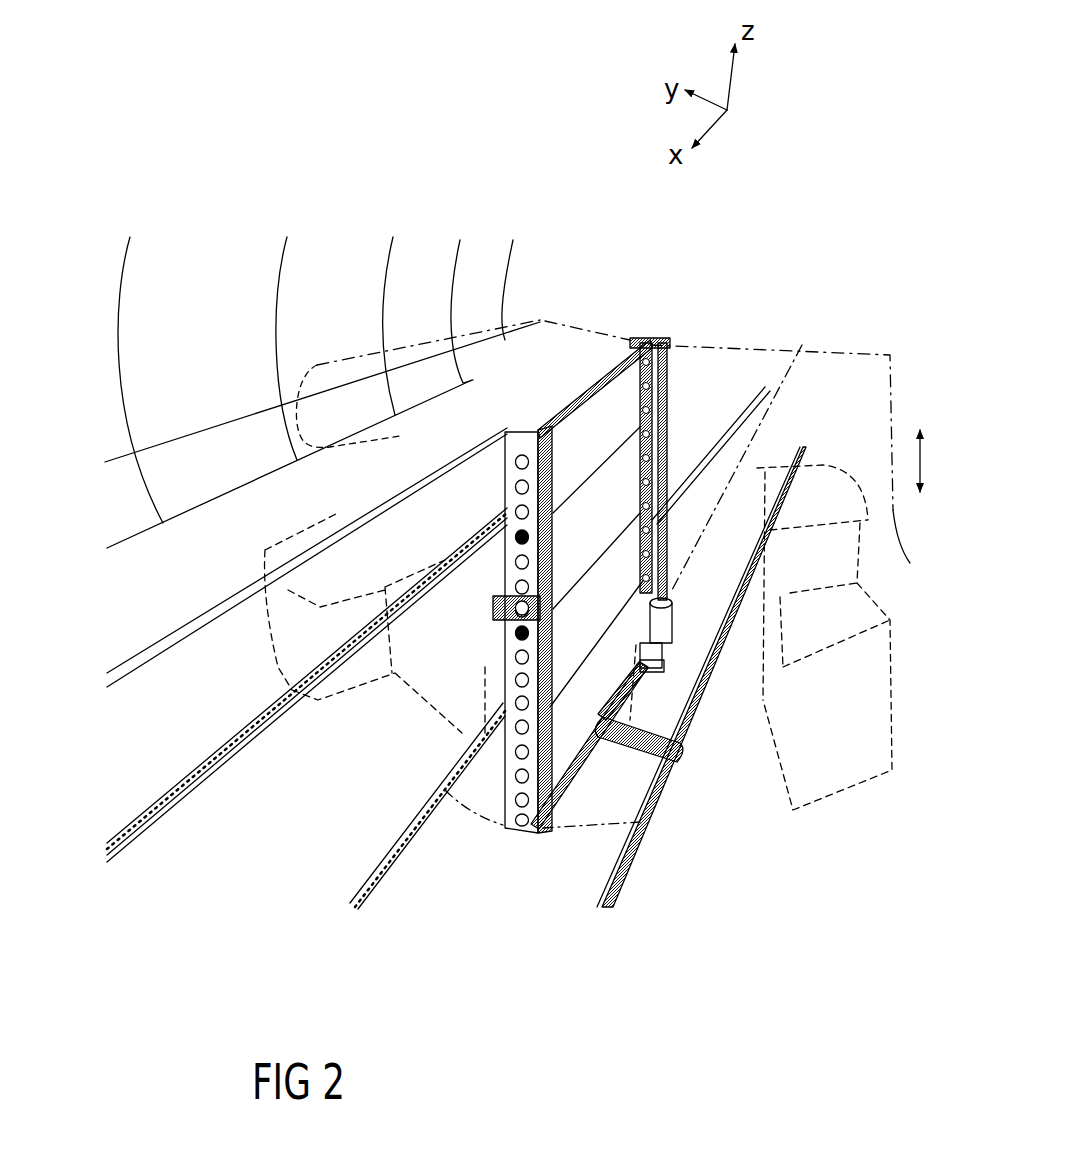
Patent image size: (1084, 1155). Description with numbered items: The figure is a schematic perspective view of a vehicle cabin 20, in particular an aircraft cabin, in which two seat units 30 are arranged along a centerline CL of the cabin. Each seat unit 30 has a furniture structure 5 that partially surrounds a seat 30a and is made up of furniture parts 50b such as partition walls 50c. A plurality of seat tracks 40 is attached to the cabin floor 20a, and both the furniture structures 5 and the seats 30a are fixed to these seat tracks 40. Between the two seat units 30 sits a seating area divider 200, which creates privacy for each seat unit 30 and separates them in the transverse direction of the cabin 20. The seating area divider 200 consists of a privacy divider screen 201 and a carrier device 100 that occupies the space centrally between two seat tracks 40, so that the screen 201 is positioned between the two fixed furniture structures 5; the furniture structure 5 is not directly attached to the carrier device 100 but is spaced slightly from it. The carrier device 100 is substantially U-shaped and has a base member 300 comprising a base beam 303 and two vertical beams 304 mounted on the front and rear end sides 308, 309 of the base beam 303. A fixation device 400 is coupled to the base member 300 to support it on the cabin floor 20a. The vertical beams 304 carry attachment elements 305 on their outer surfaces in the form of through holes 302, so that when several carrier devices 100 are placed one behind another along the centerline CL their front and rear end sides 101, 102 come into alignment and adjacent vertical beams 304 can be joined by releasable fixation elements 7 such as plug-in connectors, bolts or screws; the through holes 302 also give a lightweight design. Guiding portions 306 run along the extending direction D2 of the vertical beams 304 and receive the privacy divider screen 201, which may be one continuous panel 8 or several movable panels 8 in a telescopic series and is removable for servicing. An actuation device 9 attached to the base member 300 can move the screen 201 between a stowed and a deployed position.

The vehicle cabin 20 is at (247, 265).
The cabin floor 20a is at (379, 810).
The seat unit 30 is at (368, 280).
The seat 30a is at (393, 568).
The furniture structure 5 is at (407, 335).
The furniture parts 50b is at (480, 295).
The partition walls 50c is at (318, 366).
The seat track 40 is at (150, 655).
The carrier device 100 is at (450, 838).
The front end side 101 is at (513, 830).
The seating area divider 200 is at (629, 589).
The privacy divider screen 201 is at (569, 540).
The through holes 302 is at (514, 510).
The vertical beam 304 is at (559, 540).
The attachment element 305 is at (493, 617).
The guiding portion 306 is at (541, 428).
The front end side 308 is at (540, 838).
The rear end side 309 is at (664, 672).
The base member 300 is at (692, 711).
The base beam 303 is at (688, 751).
The fixation device 400 is at (610, 762).
The fixation element 7 is at (493, 600).
The panel 8 is at (626, 461).
The actuation device 9 is at (670, 598).
The rear end side 102 is at (629, 544).
The centerline CL is at (803, 345).
The extending direction D2 is at (942, 461).